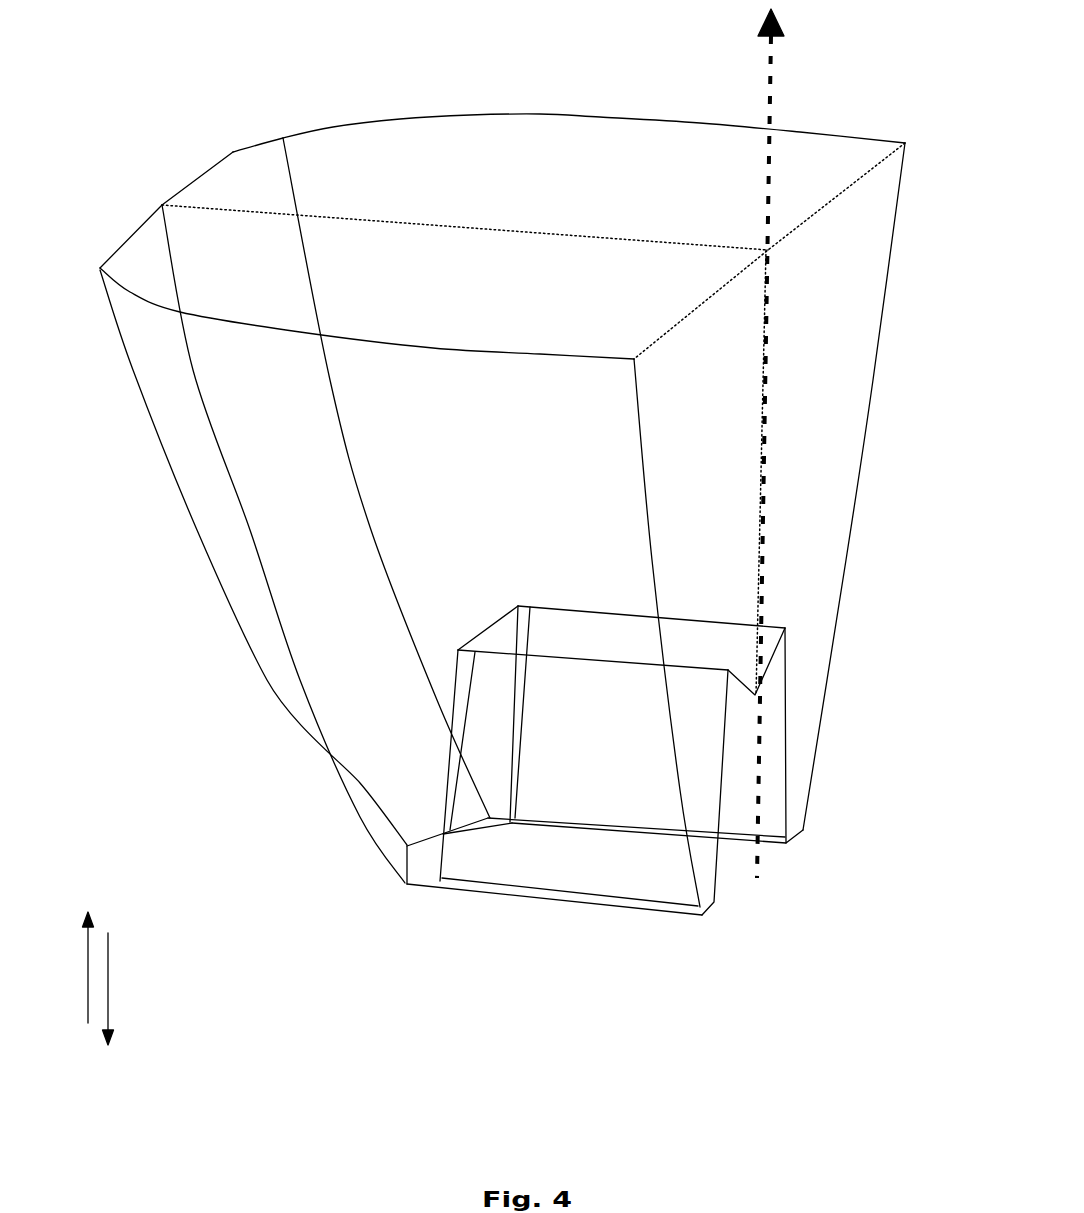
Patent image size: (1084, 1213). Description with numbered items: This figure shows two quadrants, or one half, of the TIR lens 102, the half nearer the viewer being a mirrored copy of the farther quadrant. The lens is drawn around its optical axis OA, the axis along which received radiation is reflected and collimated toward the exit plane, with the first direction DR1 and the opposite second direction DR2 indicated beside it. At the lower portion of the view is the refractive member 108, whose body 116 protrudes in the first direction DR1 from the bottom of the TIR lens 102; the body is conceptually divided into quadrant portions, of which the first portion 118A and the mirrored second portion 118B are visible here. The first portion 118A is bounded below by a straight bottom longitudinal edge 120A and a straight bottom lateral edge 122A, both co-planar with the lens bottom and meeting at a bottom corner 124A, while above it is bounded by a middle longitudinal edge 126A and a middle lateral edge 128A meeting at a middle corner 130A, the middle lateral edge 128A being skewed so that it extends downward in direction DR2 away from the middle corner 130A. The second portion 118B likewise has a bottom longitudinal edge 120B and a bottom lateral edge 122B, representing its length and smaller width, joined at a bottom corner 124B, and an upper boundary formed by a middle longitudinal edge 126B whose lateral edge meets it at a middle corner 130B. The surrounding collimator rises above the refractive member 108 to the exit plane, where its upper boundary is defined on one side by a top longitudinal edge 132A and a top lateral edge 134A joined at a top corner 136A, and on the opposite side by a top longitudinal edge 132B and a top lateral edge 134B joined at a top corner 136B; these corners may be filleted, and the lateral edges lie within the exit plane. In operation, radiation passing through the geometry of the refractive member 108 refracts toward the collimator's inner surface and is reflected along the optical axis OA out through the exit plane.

The TIR lens 102 is at (855, 107).
The optical axis OA is at (771, 83).
The refractive member 108 is at (850, 493).
The body 116 is at (753, 734).
The first portion 118A is at (792, 783).
The second portion 118B is at (720, 860).
The bottom longitudinal edge 120A is at (603, 823).
The bottom longitudinal edge 120B is at (597, 902).
The bottom lateral edge 122A is at (488, 832).
The bottom lateral edge 122B is at (450, 862).
The bottom corner 124A is at (515, 820).
The bottom corner 124B is at (440, 881).
The middle longitudinal edge 126A is at (677, 614).
The middle longitudinal edge 126B is at (562, 657).
The middle lateral edge 128A is at (505, 610).
The middle corner 130A is at (517, 605).
The middle corner 130B is at (458, 647).
The top longitudinal edge 132A is at (638, 121).
The top longitudinal edge 132B is at (359, 338).
The top lateral edge 134A is at (200, 178).
The top lateral edge 134B is at (124, 245).
The top corner 136A is at (329, 130).
The top corner 136B is at (100, 270).
The first direction DR1 is at (88, 953).
The second direction DR2 is at (112, 1005).